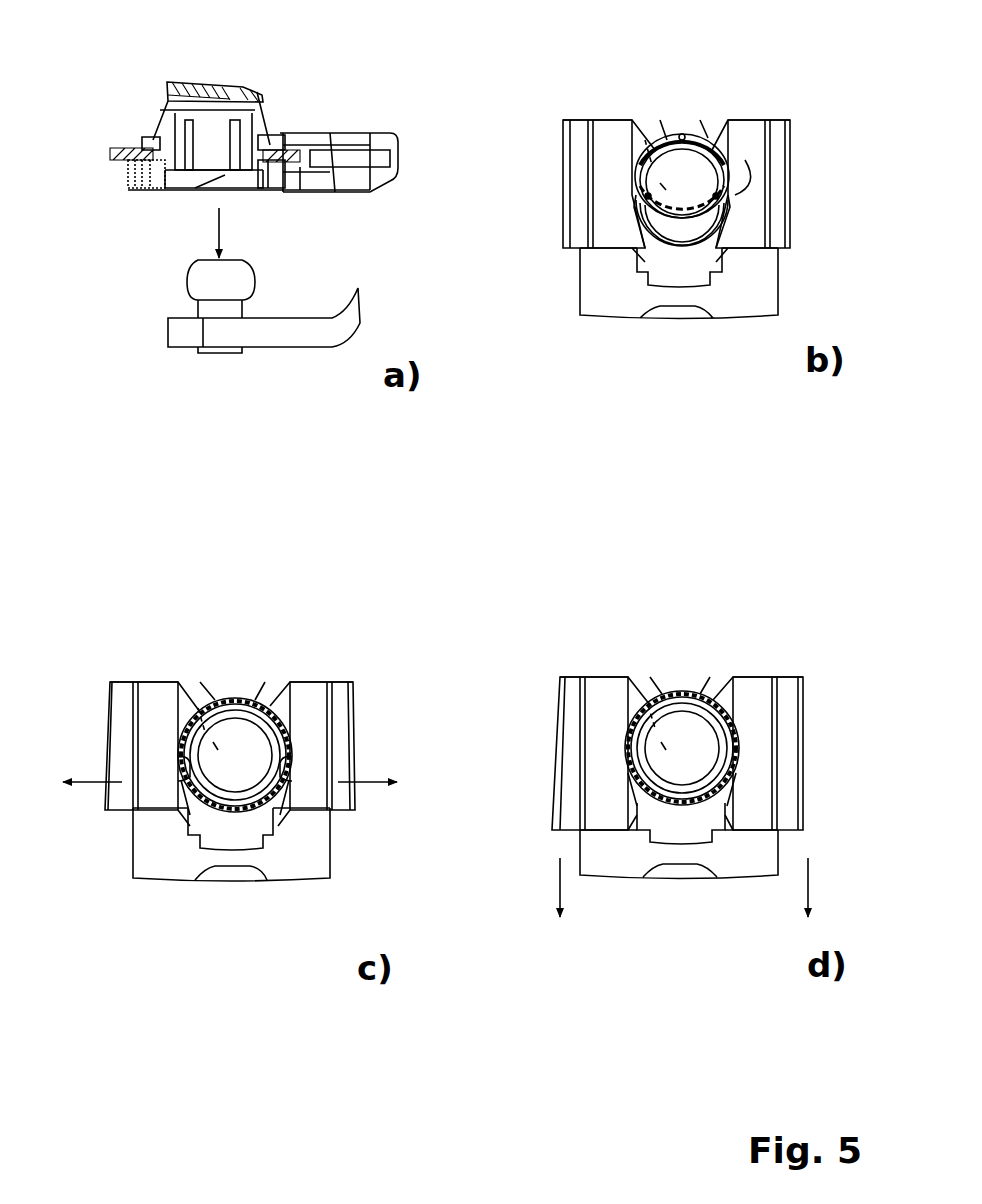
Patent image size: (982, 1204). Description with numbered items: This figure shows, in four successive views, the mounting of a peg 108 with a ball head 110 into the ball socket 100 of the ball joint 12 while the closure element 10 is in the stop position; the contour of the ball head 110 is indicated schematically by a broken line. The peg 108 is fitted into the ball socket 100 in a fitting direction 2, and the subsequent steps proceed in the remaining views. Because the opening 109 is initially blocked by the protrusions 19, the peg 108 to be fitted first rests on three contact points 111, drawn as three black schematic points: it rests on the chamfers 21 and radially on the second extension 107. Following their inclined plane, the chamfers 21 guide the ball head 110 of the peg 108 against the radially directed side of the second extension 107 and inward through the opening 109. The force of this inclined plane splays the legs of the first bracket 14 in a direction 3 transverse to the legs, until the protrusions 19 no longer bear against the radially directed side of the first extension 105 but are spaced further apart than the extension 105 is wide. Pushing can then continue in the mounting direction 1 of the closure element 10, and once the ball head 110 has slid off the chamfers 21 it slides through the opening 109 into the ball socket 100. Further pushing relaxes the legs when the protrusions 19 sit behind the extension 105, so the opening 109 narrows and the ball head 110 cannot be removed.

The mounting direction 1 is at (560, 885).
The fitting direction 2 is at (222, 222).
The splaying direction 3 is at (108, 782).
The closure element 10 is at (390, 128).
The ball joint 12 is at (125, 92).
The first bracket 14 is at (576, 130).
The protrusions 19 is at (745, 236).
The chamfers 21 is at (722, 207).
The ball socket 100 is at (250, 102).
The first extension 105 is at (232, 835).
The second extension 107 is at (683, 130).
The peg 108 is at (196, 310).
The opening 109 is at (243, 286).
The ball head 110 is at (656, 128).
The contact points 111 is at (735, 192).